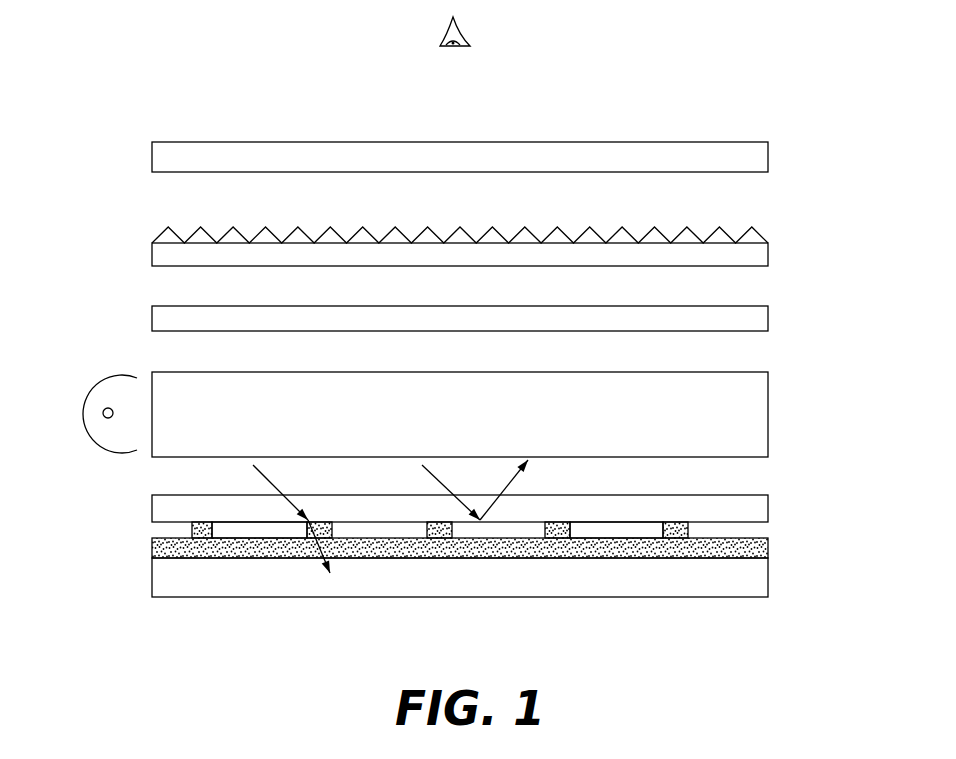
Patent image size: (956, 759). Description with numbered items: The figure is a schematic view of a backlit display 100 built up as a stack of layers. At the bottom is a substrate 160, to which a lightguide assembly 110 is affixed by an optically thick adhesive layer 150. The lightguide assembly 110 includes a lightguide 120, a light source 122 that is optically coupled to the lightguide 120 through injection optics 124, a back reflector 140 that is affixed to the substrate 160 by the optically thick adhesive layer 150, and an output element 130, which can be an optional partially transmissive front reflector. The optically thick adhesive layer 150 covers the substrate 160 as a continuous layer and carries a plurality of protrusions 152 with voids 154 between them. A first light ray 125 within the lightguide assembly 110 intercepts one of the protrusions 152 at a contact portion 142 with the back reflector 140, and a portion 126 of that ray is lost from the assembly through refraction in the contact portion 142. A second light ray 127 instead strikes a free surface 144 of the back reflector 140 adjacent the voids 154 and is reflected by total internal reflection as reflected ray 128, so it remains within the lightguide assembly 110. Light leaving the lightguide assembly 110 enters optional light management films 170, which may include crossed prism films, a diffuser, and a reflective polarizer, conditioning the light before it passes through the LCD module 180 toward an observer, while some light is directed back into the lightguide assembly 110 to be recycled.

The backlit display 100 is at (173, 96).
The lightguide assembly 110 is at (778, 306).
The lightguide 120 is at (167, 376).
The light source 122 is at (104, 409).
The injection optics 124 is at (95, 438).
The first light ray 125 is at (268, 480).
The portion of light ray 126 is at (313, 545).
The second light ray 127 is at (436, 478).
The reflected light ray 128 is at (514, 478).
The output element 130 is at (152, 314).
The back reflector 140 is at (152, 511).
The contact portion 142 is at (202, 526).
The free surface 144 is at (243, 522).
The optically thick adhesive layer 150 is at (152, 550).
The protrusions 152 is at (678, 530).
The voids 154 is at (603, 530).
The substrate 160 is at (152, 579).
The light management films 170 is at (768, 258).
The LCD module 180 is at (768, 158).